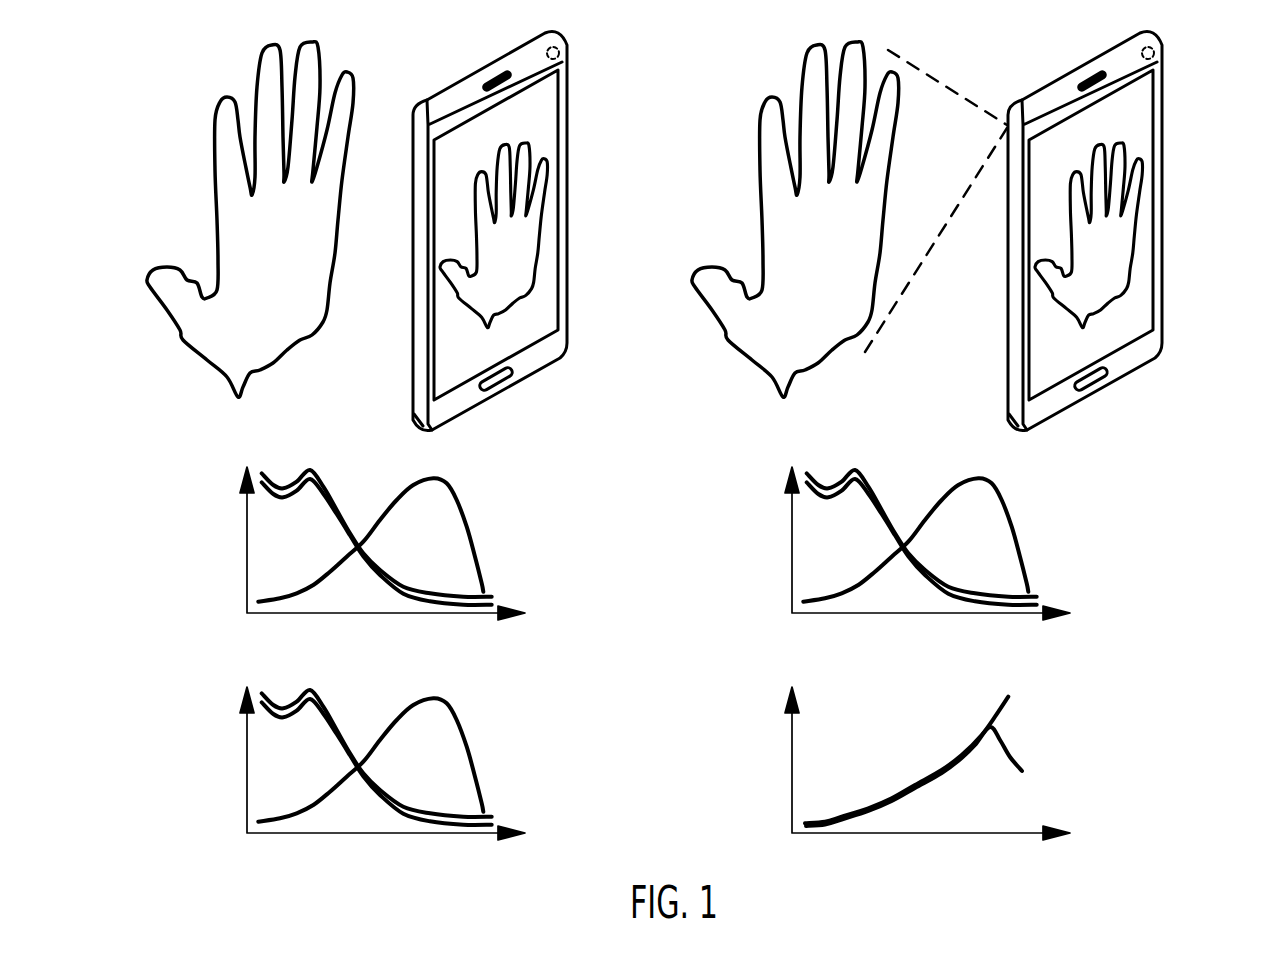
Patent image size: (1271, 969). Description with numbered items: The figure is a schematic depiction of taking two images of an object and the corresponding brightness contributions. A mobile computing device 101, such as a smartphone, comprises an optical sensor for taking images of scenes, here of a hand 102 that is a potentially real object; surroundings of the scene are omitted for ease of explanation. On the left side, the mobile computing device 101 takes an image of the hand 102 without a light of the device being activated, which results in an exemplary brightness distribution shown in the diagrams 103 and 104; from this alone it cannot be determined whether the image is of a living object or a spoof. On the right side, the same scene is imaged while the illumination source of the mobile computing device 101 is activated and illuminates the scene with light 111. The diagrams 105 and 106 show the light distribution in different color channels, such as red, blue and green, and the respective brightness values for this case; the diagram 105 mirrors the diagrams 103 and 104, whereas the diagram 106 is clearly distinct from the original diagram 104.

The mobile computing device 101 is at (574, 83).
The hand 102 is at (200, 163).
The diagram 103 is at (405, 537).
The diagram 104 is at (405, 757).
The diagram 105 is at (950, 537).
The diagram 106 is at (950, 757).
The light 111 is at (956, 94).